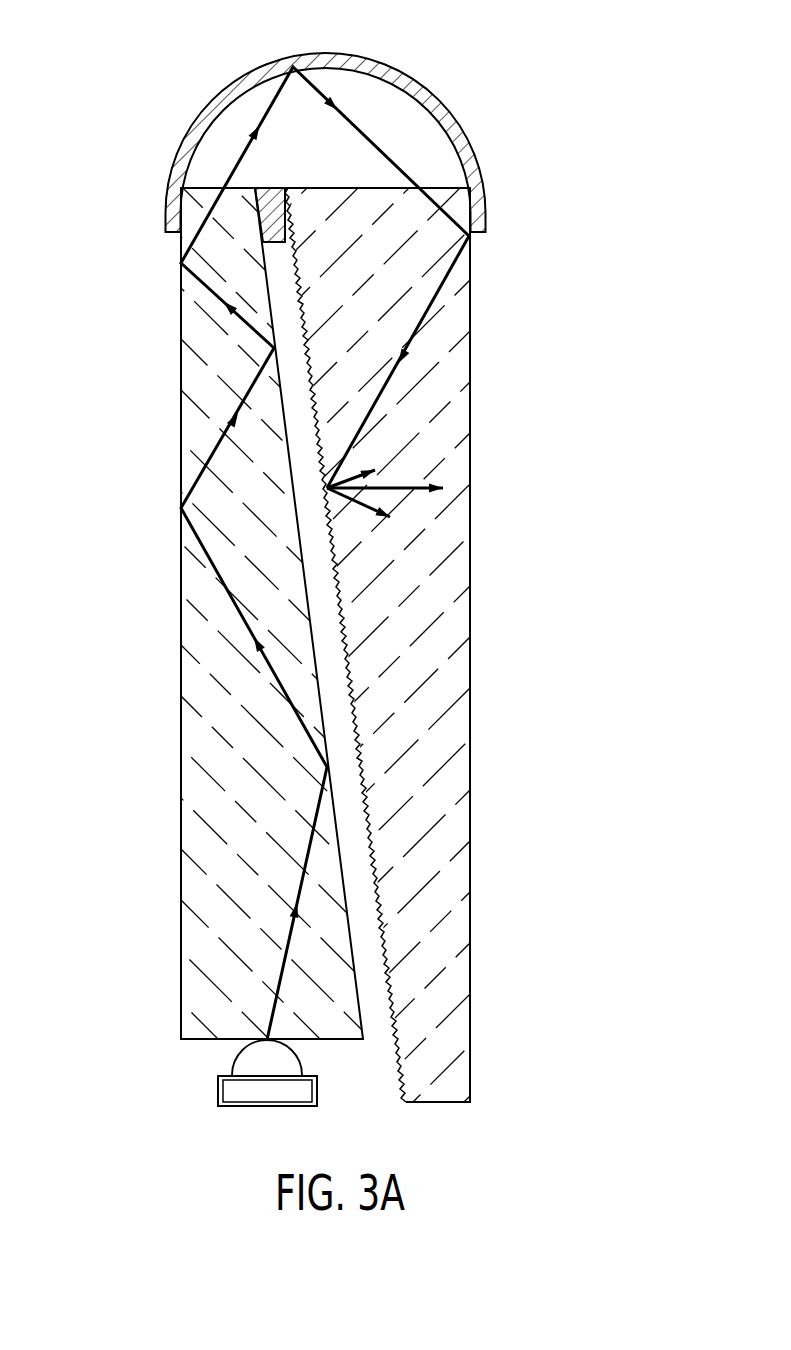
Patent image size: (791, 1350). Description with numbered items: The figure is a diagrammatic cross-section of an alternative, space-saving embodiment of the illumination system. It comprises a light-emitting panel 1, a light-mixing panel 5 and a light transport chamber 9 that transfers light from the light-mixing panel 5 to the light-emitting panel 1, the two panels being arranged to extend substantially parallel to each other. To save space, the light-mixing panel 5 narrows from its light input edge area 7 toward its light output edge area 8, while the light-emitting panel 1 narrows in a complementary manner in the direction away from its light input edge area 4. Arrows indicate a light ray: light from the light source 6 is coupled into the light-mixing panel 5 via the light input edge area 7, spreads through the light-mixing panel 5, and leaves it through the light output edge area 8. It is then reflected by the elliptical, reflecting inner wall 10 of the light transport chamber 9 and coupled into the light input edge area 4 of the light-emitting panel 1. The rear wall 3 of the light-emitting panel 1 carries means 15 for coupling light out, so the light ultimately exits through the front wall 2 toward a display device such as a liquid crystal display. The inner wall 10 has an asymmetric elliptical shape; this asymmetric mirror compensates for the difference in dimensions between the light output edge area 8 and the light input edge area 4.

The light-emitting panel 1 is at (395, 554).
The front wall 2 is at (395, 645).
The rear wall 3 is at (409, 645).
The light input edge area 4 is at (407, 190).
The light-mixing panel 5 is at (138, 420).
The light source 6 is at (240, 1067).
The light input edge area 7 is at (210, 1038).
The light output edge area 8 is at (203, 188).
The light transport chamber 9 is at (356, 117).
The elliptical, reflecting inner wall 10 is at (372, 68).
The means for coupling light out 15 is at (377, 843).